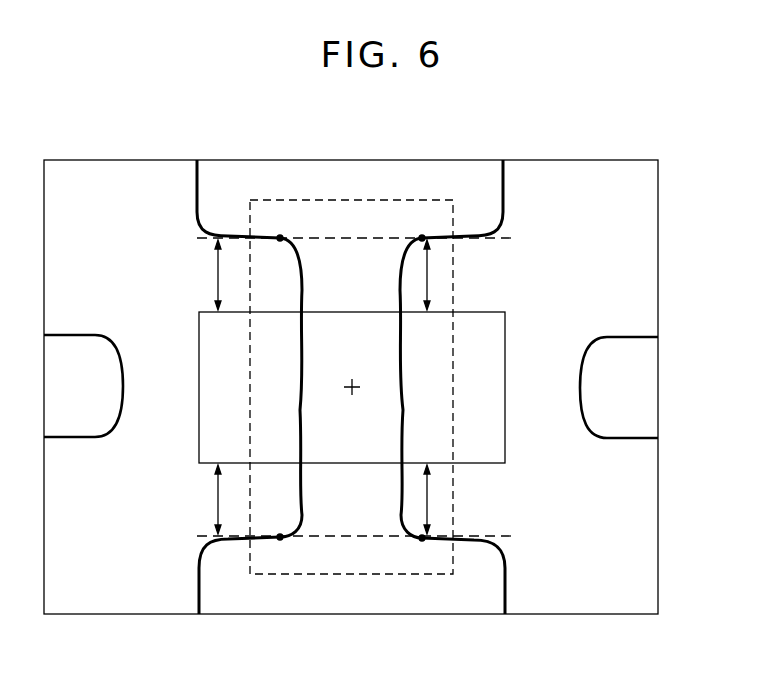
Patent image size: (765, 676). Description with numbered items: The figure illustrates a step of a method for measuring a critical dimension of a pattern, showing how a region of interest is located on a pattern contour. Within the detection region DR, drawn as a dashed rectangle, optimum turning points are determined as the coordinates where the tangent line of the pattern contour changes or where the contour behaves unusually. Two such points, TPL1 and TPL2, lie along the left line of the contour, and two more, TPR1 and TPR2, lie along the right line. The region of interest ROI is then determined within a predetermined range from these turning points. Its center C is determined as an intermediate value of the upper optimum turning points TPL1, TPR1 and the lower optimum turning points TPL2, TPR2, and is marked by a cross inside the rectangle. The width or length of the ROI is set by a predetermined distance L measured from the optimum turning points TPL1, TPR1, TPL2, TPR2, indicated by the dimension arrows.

The upper left optimum turning point TPL1 is at (280, 236).
The upper right optimum turning point TPR1 is at (422, 236).
The lower left optimum turning point TPL2 is at (280, 539).
The lower right optimum turning point TPR2 is at (422, 540).
The detection region DR is at (454, 278).
The region of interest ROI is at (490, 464).
The center of the ROI C is at (354, 385).
The predetermined distance L is at (321, 387).